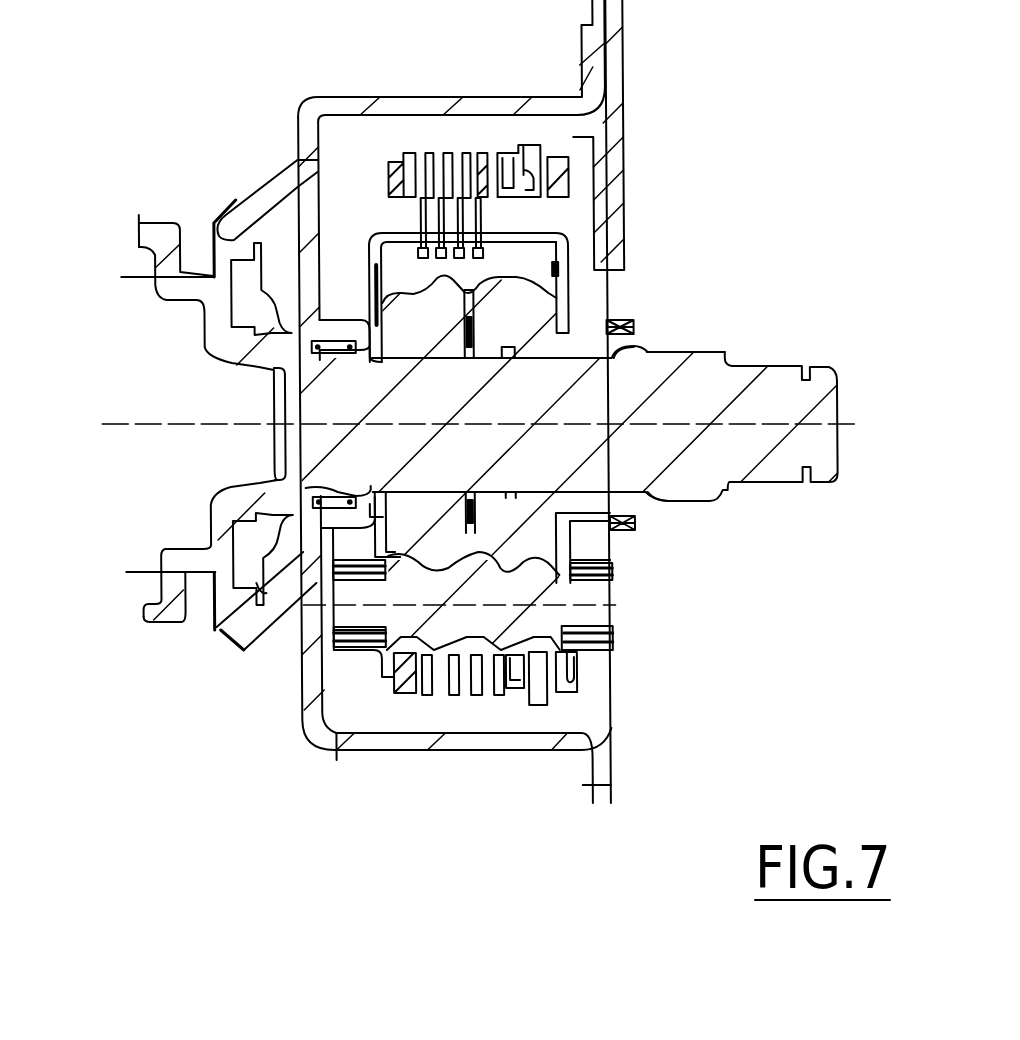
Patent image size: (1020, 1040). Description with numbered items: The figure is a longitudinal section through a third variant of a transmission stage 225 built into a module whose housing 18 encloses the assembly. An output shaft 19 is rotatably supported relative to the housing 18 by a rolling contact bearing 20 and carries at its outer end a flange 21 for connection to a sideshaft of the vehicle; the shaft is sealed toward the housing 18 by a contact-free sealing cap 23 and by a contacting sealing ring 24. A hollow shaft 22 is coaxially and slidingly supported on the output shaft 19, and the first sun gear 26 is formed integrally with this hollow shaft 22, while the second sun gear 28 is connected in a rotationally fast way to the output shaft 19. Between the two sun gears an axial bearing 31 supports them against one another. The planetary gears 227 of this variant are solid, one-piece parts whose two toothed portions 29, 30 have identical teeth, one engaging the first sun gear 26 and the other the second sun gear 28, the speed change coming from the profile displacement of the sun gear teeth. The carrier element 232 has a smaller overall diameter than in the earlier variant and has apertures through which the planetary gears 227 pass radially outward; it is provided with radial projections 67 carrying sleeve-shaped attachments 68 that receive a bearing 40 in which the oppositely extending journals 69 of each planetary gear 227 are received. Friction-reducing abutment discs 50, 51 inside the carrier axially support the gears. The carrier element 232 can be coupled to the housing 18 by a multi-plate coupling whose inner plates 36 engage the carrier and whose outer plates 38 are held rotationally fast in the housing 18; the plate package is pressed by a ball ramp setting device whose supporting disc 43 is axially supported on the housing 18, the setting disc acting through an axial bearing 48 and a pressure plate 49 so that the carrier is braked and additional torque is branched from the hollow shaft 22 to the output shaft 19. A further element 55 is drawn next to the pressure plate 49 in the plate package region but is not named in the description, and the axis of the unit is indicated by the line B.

The housing 18 is at (307, 110).
The output shaft 19 is at (800, 395).
The rolling contact bearing 20 is at (212, 500).
The flange 21 is at (140, 619).
The hollow shaft 22 is at (634, 361).
The contact-free sealing cap 23 is at (213, 268).
The contacting sealing ring 24 is at (257, 595).
The first sun gear 26 is at (540, 308).
The second sun gear 28 is at (420, 293).
The toothed portion 29 is at (527, 650).
The toothed portion 30 is at (438, 650).
The axial bearing 31 is at (464, 292).
The inner plates 36 is at (417, 215).
The outer plates 38 is at (430, 158).
The bearing 40 is at (611, 571).
The supporting disc 43 is at (560, 167).
The axial bearing 48 is at (510, 165).
The pressure plate 49 is at (489, 162).
The abutment disc 50 is at (557, 270).
The abutment disc 51 is at (380, 275).
The end plate 55 is at (532, 163).
The radial projections 67 is at (560, 635).
The sleeve-shaped attachments 68 is at (593, 662).
The journals 69 is at (337, 620).
The transmission stage 225 is at (598, 680).
The planetary gears 227 is at (597, 615).
The carrier element 232 is at (563, 233).
The axis B is at (115, 422).